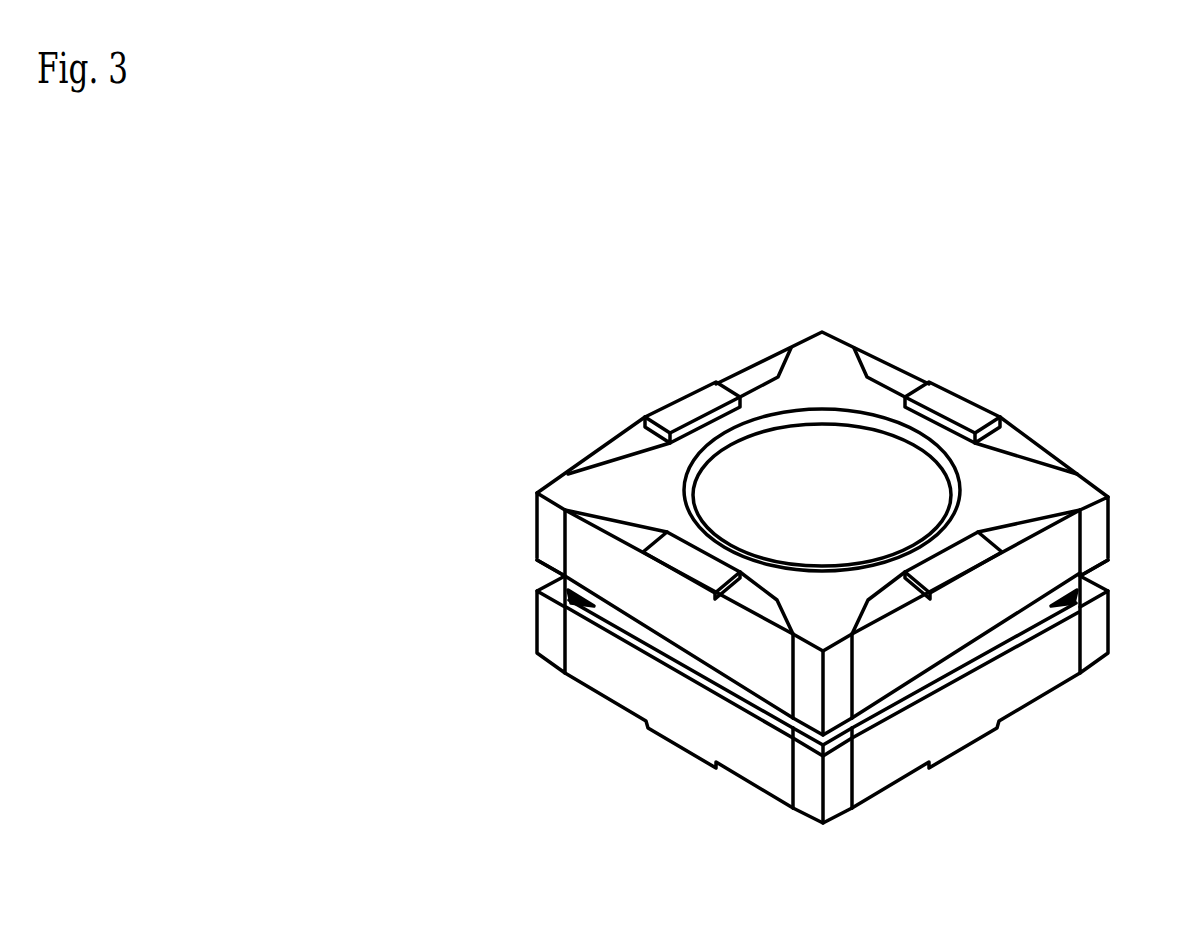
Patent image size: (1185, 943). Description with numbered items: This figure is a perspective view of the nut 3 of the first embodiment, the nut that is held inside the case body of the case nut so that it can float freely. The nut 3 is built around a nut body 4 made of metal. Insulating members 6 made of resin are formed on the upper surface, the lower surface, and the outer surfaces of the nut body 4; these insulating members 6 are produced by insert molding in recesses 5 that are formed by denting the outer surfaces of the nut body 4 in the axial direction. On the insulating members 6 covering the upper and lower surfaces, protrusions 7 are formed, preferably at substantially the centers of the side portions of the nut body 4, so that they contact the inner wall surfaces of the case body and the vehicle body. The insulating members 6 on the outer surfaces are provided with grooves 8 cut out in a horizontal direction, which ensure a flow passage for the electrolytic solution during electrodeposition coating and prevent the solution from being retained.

The nut 3 is at (500, 447).
The nut body 4 is at (816, 366).
The recess 5 is at (886, 384).
The insulating member 6 is at (1010, 595).
The protrusion 7 is at (693, 403).
The groove 8 is at (664, 658).